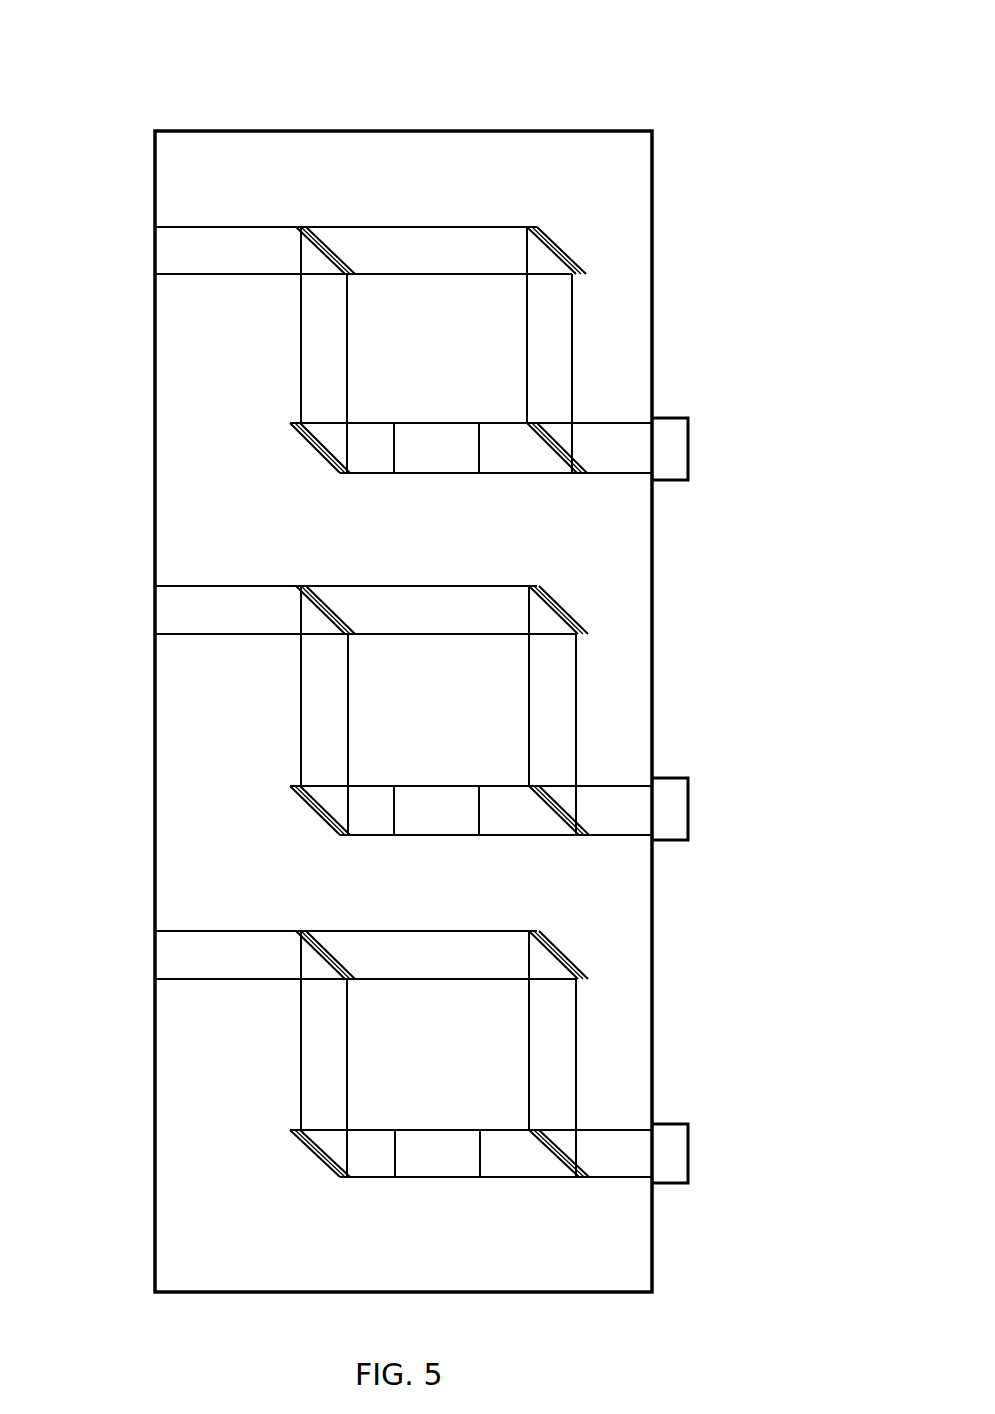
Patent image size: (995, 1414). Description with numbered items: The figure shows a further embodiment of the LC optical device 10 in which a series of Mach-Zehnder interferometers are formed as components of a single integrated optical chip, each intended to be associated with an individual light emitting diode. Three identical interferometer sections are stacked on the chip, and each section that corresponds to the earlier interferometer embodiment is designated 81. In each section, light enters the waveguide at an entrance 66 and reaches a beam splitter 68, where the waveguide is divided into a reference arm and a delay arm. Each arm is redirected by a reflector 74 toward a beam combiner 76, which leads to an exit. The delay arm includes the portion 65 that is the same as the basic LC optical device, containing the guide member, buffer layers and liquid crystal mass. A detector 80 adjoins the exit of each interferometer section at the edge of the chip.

The LC optical device 10 is at (500, 98).
The portion corresponding to LC optical device of earlier embodiments 65 is at (444, 476).
The entrance 66 is at (163, 252).
The beam splitter 68 is at (322, 238).
The reflector 74 is at (556, 247).
The beam combiner 76 is at (551, 466).
The detector 80 is at (688, 438).
The portion corresponding to LC optical device of FIG. 3 81 is at (617, 327).